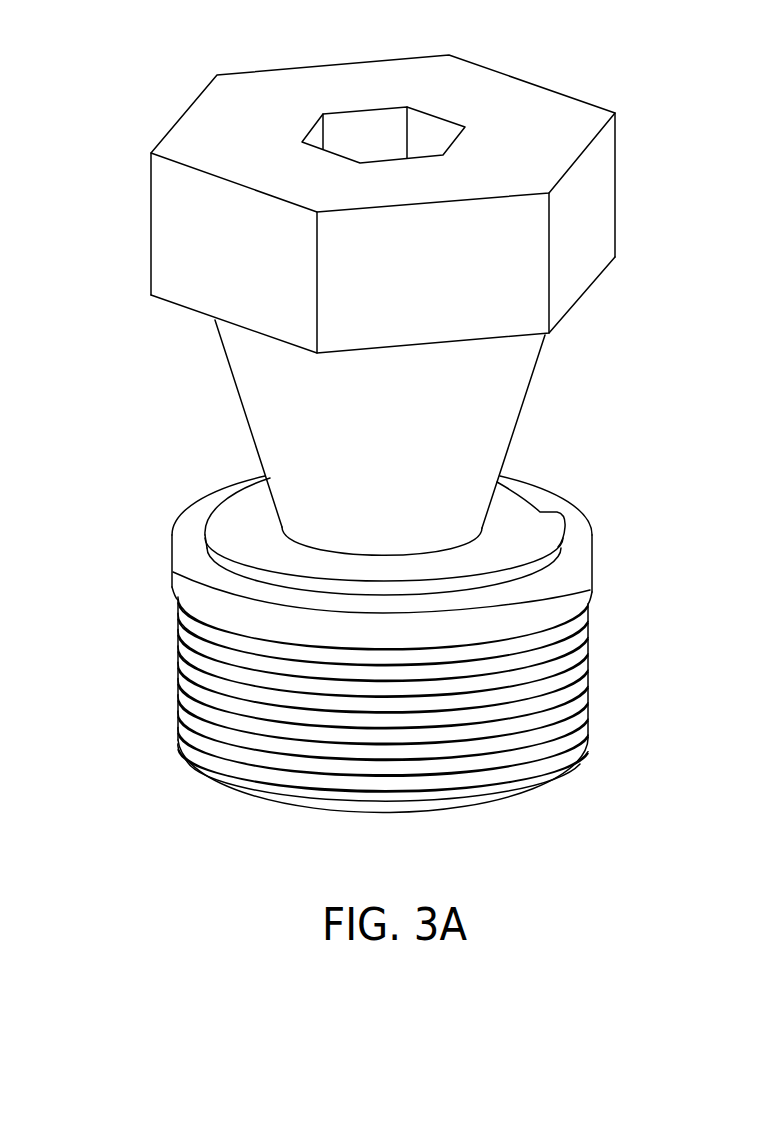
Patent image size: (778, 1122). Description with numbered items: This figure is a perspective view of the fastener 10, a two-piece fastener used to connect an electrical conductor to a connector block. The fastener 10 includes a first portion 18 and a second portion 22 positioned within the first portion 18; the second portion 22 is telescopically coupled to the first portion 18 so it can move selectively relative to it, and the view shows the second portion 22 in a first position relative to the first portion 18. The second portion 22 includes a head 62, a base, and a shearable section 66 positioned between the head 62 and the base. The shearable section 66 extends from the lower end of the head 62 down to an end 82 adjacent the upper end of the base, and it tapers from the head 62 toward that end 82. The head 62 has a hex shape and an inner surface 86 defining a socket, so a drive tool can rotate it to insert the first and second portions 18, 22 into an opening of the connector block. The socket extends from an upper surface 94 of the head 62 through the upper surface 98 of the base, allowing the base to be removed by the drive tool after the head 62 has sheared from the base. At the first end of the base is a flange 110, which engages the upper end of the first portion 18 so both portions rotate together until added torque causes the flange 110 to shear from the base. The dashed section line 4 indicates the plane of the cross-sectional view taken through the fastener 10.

The fastener 10 is at (117, 36).
The section line 4- 4 is at (152, 236).
The second portion 22 is at (223, 285).
The upper surface of the head 94 is at (519, 93).
The inner surface 86 is at (423, 126).
The head 62 is at (525, 302).
The shearable section 66 is at (513, 390).
The upper surface of the base 98 is at (243, 513).
The end of the shearable section 82 is at (485, 526).
The flange 110 is at (592, 530).
The first portion 18 is at (542, 677).